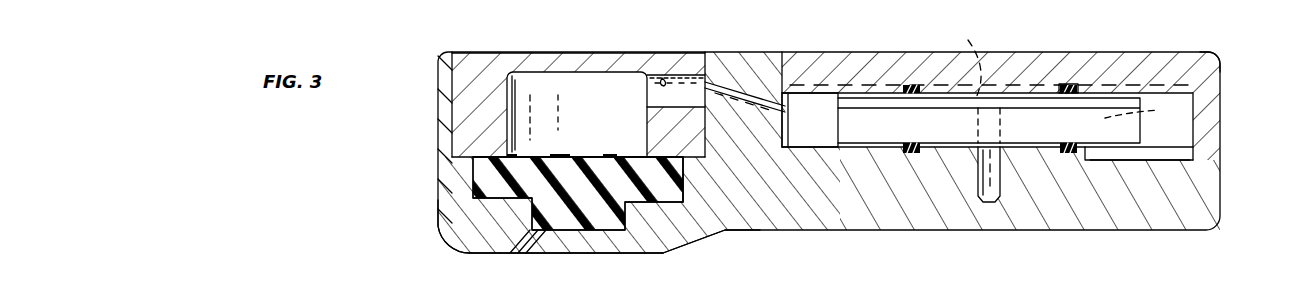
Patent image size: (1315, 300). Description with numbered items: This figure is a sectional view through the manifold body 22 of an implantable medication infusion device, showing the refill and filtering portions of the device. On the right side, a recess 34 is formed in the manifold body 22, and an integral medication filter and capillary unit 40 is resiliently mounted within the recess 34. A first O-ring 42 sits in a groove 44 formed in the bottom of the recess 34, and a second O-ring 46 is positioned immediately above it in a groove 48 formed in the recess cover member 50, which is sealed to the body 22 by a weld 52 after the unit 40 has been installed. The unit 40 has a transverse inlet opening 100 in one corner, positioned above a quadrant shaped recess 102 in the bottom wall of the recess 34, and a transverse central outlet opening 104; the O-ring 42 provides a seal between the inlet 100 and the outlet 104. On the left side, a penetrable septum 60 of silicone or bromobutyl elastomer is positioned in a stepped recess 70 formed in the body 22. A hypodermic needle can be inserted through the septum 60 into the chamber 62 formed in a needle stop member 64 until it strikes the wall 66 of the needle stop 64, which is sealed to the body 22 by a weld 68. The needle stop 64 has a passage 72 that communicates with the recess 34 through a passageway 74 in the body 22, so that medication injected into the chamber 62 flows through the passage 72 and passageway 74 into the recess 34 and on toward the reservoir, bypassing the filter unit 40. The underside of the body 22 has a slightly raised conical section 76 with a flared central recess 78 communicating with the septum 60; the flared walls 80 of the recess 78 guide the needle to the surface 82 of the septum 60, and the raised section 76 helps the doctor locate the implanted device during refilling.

The manifold body 22 is at (1227, 212).
The recess 34 is at (1180, 141).
The integral medication filter and capillary unit 40 is at (1142, 132).
The first O-ring 42 is at (886, 153).
The groove 44 is at (918, 155).
The O-ring 46 is at (1074, 85).
The groove 48 is at (1064, 85).
The recess cover member 50 is at (985, 62).
The weld 52 is at (1205, 55).
The penetrable septum 60 is at (495, 195).
The chamber 62 is at (577, 114).
The needle stop member 64 is at (492, 68).
The wall 66 is at (593, 63).
The weld 68 is at (705, 52).
The stepped recess 70 is at (518, 180).
The passage 72 is at (660, 82).
The passageway 74 is at (752, 105).
The slightly raised conical section 76 is at (497, 254).
The flared central recess 78 is at (583, 246).
The flared walls 80 is at (629, 254).
The surface 82 is at (558, 246).
The transverse inlet opening 100 is at (1146, 108).
The quadrant shaped recess 102 is at (1150, 158).
The transverse central outlet opening 104 is at (965, 81).